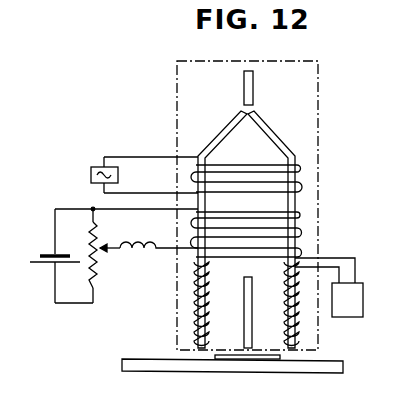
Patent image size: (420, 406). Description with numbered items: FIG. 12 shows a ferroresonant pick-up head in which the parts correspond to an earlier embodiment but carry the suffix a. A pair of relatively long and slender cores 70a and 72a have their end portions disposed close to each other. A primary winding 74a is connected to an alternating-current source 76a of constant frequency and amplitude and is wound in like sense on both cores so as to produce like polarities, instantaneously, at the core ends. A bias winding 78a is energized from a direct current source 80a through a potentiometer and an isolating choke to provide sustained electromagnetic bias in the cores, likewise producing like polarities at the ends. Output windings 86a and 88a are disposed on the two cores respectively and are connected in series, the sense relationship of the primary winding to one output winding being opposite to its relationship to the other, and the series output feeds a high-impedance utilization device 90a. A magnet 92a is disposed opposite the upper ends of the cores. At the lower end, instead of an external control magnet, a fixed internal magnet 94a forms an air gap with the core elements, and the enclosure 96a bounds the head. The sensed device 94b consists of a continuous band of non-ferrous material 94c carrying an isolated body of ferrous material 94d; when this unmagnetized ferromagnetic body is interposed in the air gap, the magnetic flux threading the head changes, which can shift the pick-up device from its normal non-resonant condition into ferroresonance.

The core 70a is at (228, 129).
The core 72a is at (268, 129).
The primary winding 74a is at (300, 178).
The alternating-current source 76a is at (92, 170).
The bias winding 78a is at (300, 232).
The direct current source 80a is at (37, 255).
The output winding 86a is at (196, 305).
The output winding 88a is at (298, 318).
The utilization device 90a is at (363, 296).
The magnet 92a is at (244, 80).
The fixed internal magnet 94a is at (244, 294).
The sensed device 94b is at (333, 359).
The continuous band of non-ferrous material 94c is at (190, 366).
The isolated body of ferrous material 94d is at (215, 356).
The housing enclosure 96a is at (177, 106).